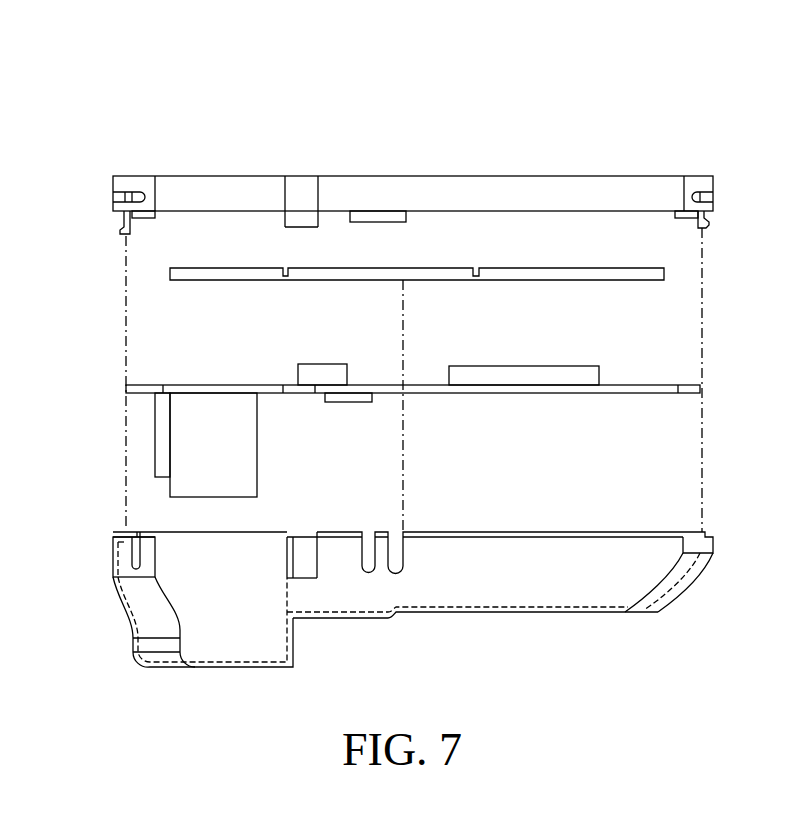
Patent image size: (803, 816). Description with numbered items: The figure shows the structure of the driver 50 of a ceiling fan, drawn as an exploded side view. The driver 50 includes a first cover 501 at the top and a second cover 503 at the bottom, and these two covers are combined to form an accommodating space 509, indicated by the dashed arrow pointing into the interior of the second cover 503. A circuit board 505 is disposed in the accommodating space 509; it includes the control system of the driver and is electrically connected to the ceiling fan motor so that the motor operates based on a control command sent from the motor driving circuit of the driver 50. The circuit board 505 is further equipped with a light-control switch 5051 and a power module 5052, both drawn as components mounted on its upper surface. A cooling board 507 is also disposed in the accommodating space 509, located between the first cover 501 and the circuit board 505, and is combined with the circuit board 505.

The driver 50 is at (71, 32).
The first cover 501 is at (120, 183).
The second cover 503 is at (118, 548).
The circuit board 505 is at (378, 408).
The light-control switch 5051 is at (318, 368).
The power module 5052 is at (530, 370).
The cooling board 507 is at (170, 276).
The accommodating space 509 is at (518, 562).